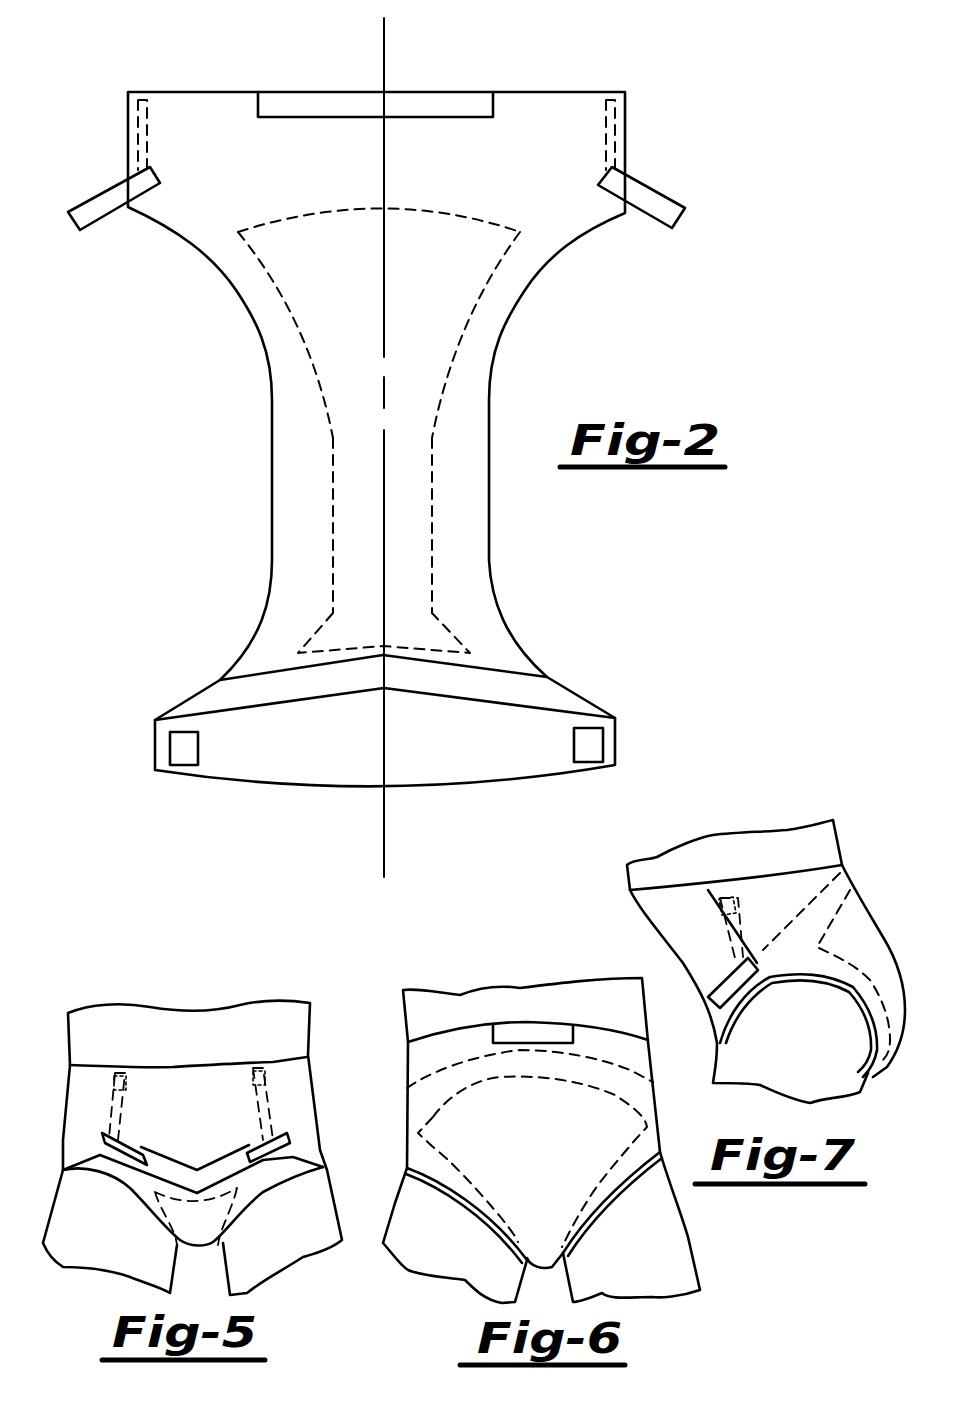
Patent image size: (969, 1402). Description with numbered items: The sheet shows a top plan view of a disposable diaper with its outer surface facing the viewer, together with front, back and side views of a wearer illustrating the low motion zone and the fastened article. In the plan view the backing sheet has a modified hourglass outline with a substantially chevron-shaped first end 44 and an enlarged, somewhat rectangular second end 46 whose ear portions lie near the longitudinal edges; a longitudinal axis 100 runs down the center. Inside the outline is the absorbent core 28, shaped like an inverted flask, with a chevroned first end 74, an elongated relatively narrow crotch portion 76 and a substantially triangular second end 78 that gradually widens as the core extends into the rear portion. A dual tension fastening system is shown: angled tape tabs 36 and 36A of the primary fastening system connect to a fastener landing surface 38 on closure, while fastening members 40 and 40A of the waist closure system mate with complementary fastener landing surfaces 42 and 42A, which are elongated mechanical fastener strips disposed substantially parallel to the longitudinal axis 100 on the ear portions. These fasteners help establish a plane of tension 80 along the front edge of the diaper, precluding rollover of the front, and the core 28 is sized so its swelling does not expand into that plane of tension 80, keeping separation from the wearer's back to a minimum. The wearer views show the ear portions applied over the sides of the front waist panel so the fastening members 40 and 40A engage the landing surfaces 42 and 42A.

In FIG. 2, the absorbent core 28 is at (448, 297).
In FIG. 2, the angled tape tab 36 is at (92, 197).
In FIG. 5, the angled tape tab 36 is at (143, 1148).
In FIG. 2, the angled tape tab 36A is at (668, 193).
In FIG. 5, the angled tape tab 36A is at (277, 1148).
In FIG. 5, the fastener landing surface 38 is at (172, 1170).
In FIG. 2, the fastening member 40 is at (135, 118).
In FIG. 5, the fastening member 40 is at (135, 1127).
In FIG. 2, the fastening member 40A is at (616, 128).
In FIG. 5, the fastening member 40A is at (280, 1103).
In FIG. 2, the fastener landing surface 42 is at (182, 748).
In FIG. 2, the fastener landing surface 42A is at (588, 728).
In FIG. 5, the fastener landing surface 42A is at (110, 1083).
In FIG. 2, the first end 44 is at (430, 790).
In FIG. 5, the first end 44 is at (177, 1067).
In FIG. 2, the second end 46 is at (520, 91).
In FIG. 5, the second end 46 is at (288, 1063).
In FIG. 2, the chevroned first end 74 is at (440, 635).
In FIG. 2, the crotch portion 76 is at (418, 463).
In FIG. 2, the second end 78 is at (530, 267).
In FIG. 5, the plane of tension 80 is at (222, 1083).
In FIG. 2, the longitudinal axis 100 is at (383, 826).